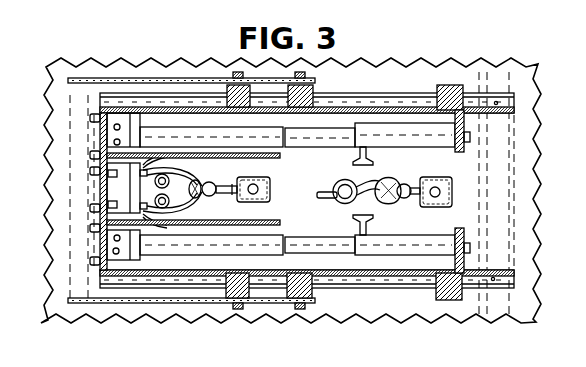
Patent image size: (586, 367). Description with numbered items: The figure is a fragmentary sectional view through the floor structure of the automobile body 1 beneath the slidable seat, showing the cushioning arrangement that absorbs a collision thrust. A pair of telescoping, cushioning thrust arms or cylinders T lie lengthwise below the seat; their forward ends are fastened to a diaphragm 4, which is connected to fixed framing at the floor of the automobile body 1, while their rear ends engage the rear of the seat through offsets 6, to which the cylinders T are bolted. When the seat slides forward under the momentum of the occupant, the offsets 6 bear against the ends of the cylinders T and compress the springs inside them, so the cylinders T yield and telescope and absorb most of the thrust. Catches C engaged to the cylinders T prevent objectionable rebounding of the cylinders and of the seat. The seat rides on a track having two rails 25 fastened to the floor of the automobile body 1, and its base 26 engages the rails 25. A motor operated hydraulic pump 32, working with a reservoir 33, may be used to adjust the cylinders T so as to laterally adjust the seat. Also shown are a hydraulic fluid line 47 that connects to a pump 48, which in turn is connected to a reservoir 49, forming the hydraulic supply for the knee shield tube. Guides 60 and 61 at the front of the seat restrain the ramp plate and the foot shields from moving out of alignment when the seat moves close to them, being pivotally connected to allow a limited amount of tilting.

The automobile body 1 is at (386, 72).
The diaphragm 4 is at (133, 188).
The offsets 6 is at (460, 153).
The rails 25 is at (501, 94).
The base 26 is at (449, 85).
The motor operated hydraulic pump 32 is at (201, 196).
The reservoir 33 is at (271, 196).
The hydraulic fluid line 47 is at (326, 196).
The pump 48 is at (397, 203).
The reservoir 49 is at (425, 182).
The guide 60 is at (167, 303).
The guide 61 is at (157, 78).
The catches C is at (290, 157).
The telescoping cushioning thrust cylinders T is at (426, 156).